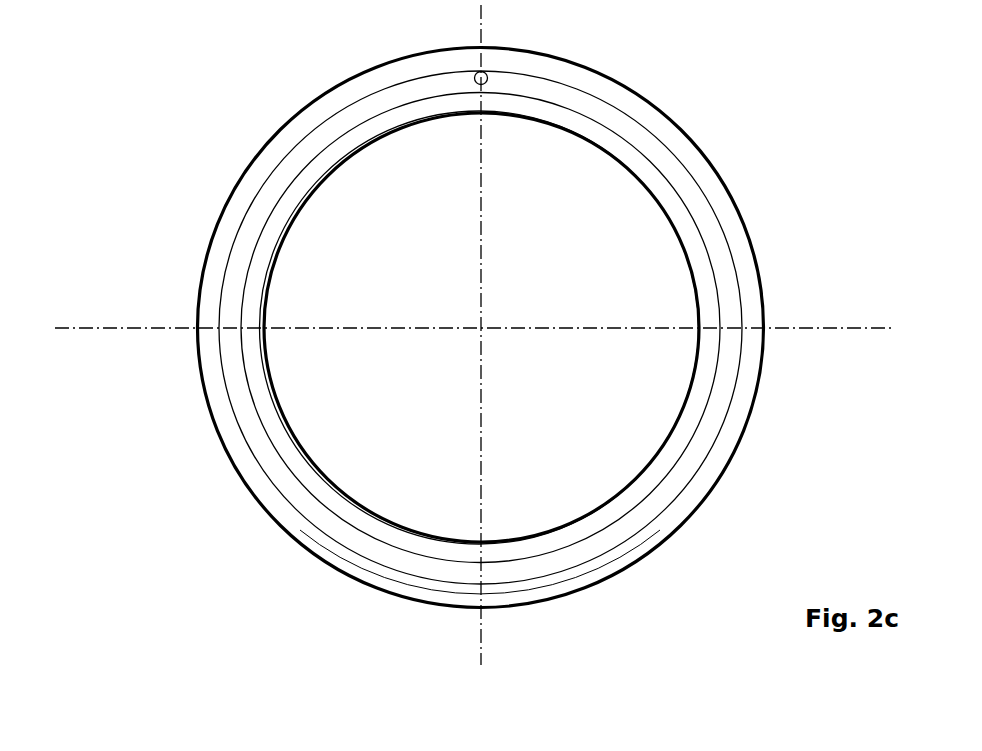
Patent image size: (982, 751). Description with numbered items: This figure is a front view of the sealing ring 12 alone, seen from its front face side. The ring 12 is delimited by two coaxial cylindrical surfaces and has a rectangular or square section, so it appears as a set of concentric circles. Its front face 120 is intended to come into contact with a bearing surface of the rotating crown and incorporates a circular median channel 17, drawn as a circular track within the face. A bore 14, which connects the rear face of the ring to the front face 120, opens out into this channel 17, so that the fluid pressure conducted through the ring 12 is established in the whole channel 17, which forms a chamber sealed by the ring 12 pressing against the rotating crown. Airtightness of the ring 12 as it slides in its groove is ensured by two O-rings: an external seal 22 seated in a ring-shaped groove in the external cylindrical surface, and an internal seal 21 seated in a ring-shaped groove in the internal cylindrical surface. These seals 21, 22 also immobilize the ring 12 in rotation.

The ring 12 is at (205, 548).
The bore 14 is at (487, 84).
The circular median channel 17 is at (243, 407).
The internal seal 21 is at (314, 442).
The external seal 22 is at (245, 158).
The front face 120 is at (263, 256).